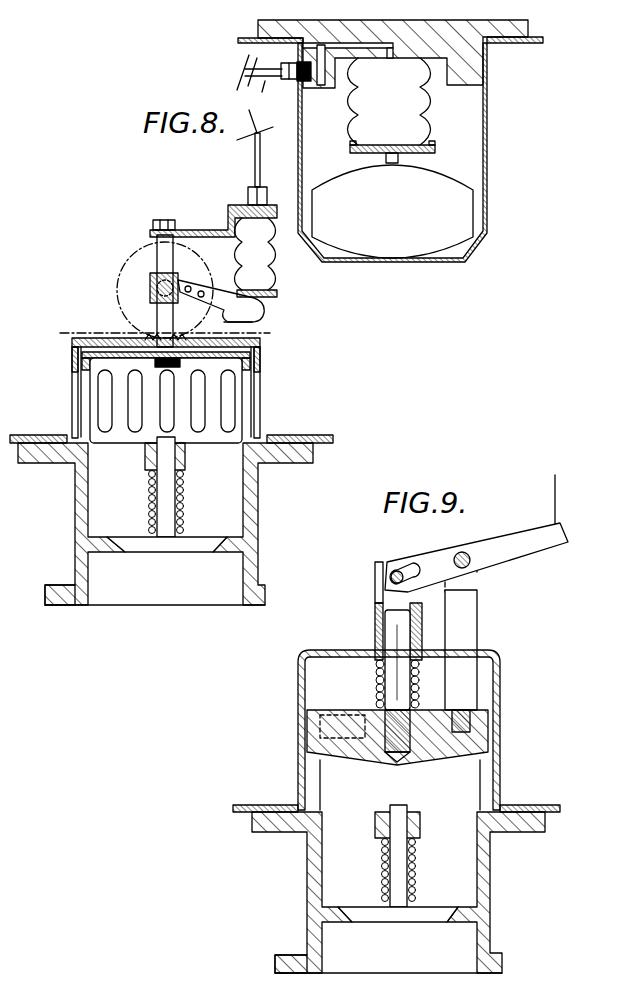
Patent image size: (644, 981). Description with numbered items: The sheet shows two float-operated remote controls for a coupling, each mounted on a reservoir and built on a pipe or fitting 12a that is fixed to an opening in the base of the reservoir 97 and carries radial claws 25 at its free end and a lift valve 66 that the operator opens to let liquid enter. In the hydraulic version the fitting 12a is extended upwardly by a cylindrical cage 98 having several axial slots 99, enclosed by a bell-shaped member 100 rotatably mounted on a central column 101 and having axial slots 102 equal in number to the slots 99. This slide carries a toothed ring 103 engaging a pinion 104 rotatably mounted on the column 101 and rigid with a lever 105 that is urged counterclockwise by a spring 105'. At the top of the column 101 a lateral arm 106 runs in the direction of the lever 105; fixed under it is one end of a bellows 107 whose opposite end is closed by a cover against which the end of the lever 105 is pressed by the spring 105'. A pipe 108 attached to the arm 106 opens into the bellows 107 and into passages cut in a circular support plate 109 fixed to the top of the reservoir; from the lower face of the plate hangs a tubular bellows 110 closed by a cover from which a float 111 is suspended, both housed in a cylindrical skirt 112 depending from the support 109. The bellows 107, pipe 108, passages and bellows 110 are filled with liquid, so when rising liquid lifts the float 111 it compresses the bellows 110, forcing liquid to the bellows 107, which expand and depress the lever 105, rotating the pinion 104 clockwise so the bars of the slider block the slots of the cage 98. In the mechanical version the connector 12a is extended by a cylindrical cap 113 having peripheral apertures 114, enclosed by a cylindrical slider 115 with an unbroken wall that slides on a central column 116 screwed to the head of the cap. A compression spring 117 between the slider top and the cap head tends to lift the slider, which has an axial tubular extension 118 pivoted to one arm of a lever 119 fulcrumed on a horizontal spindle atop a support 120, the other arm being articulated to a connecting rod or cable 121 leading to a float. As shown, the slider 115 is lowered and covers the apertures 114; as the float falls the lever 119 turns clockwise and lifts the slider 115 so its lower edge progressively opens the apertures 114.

In FIG. 8, the circular support plate 109 is at (262, 27).
In FIG. 8, the pipe 108 is at (274, 130).
In FIG. 8, the tubular bellows 110 is at (428, 112).
In FIG. 8, the cylindrical skirt 112 is at (488, 143).
In FIG. 8, the float 111 is at (452, 219).
In FIG. 8, the lateral arm 106 is at (203, 230).
In FIG. 8, the bellows 107 is at (273, 278).
In FIG. 8, the pinion 104 is at (122, 266).
In FIG. 8, the central column 101 is at (163, 322).
In FIG. 8, the lever 105 is at (251, 304).
In FIG. 8, the spring 105' is at (284, 334).
In FIG. 8, the toothed ring 103 is at (72, 340).
In FIG. 8, the cylindrical bell-shaped member 100 is at (79, 363).
In FIG. 8, the axial slots 102 is at (72, 392).
In FIG. 8, the cylindrical cage 98 is at (253, 357).
In FIG. 8, the axial slots 99 is at (197, 402).
In FIG. 8, the reservoir 97 is at (313, 435).
In FIG. 8, the pipe or fitting 12a is at (250, 502).
In FIG. 9, the pipe or fitting 12a is at (480, 888).
In FIG. 8, the lift valve 66 is at (188, 542).
In FIG. 9, the lift valve 66 is at (383, 910).
In FIG. 8, the radial claws 25 is at (68, 595).
In FIG. 9, the radial claws 25 is at (283, 966).
In FIG. 9, the connecting rod or cable 121 is at (553, 495).
In FIG. 9, the lever 119 is at (510, 543).
In FIG. 9, the axial tubular extension 118 is at (376, 603).
In FIG. 9, the central column 116 is at (392, 628).
In FIG. 9, the support 120 is at (462, 617).
In FIG. 9, the compression spring 117 is at (375, 685).
In FIG. 9, the cylindrical slider 115 is at (299, 718).
In FIG. 9, the apertures 114 is at (312, 779).
In FIG. 9, the cylindrical cap 113 is at (482, 786).